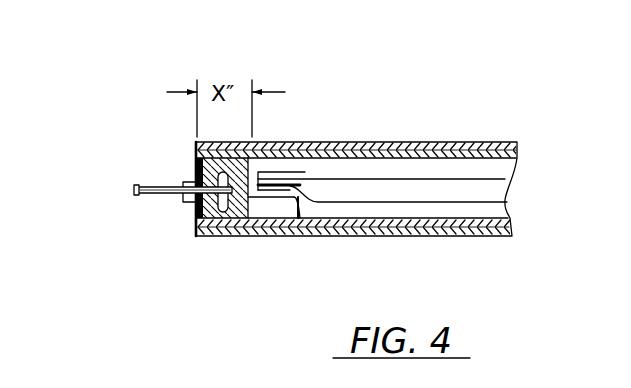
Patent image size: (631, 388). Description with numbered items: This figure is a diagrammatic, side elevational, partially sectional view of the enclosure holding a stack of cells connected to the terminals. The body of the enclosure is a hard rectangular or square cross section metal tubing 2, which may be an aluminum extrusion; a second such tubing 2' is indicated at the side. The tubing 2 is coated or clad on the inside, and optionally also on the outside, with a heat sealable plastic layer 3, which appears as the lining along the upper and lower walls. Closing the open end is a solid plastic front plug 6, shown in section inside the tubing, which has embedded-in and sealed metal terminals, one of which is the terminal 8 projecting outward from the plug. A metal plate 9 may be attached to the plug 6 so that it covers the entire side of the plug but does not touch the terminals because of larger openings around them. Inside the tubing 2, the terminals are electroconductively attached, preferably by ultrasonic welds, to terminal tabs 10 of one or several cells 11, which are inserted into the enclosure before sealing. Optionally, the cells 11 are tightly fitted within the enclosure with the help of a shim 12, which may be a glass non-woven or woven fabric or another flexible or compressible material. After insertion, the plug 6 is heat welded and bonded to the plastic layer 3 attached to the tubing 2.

The metal tubing 2 is at (356, 147).
The housing (second) 2' is at (609, 293).
The heat sealable plastic layer 3 is at (428, 142).
The front plug 6 is at (240, 212).
The metal terminal 8 is at (148, 198).
The metal plate 9 is at (195, 163).
The terminal tab 10 is at (283, 172).
The cell 11 is at (495, 169).
The shim 12 is at (420, 224).